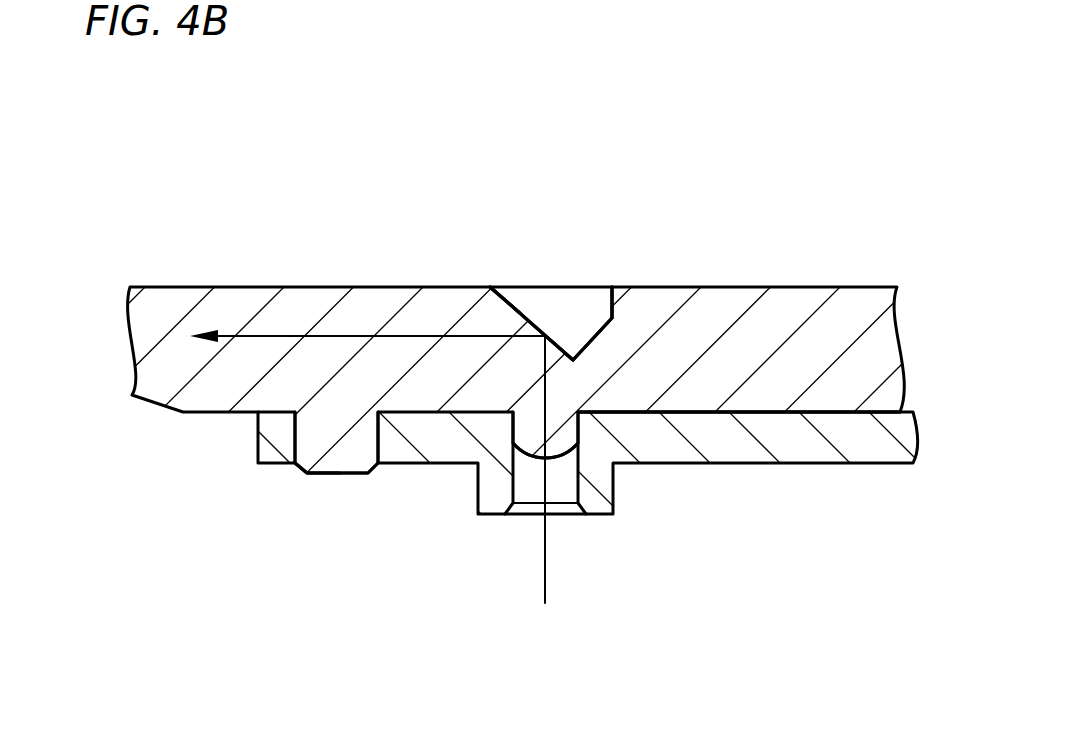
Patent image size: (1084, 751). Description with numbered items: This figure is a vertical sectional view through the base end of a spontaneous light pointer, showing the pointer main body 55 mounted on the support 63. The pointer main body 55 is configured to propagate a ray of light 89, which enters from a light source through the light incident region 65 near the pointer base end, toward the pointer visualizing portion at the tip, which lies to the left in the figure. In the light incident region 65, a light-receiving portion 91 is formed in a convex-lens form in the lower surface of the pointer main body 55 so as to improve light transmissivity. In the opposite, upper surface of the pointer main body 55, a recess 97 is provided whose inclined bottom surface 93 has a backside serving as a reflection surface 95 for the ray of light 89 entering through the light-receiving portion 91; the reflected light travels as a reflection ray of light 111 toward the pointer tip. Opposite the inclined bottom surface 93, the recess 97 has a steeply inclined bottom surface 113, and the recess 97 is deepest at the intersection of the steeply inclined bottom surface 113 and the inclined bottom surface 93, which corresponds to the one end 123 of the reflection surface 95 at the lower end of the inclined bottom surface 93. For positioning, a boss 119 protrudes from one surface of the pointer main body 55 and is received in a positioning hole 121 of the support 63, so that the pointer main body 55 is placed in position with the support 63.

The pointer main body 55 is at (205, 257).
The support 63 is at (794, 474).
The light incident region 65 is at (562, 196).
The ray of light 89 is at (548, 572).
The light-receiving portion 91 is at (533, 447).
The inclined bottom surface 93 is at (533, 316).
The reflection surface 95 is at (500, 303).
The recess 97 is at (568, 303).
The reflection ray of light 111 is at (262, 336).
The steeply inclined bottom surface 113 is at (607, 323).
The boss 119 is at (328, 476).
The positioning hole 121 is at (355, 474).
The one end of the reflection surface 123 is at (612, 413).